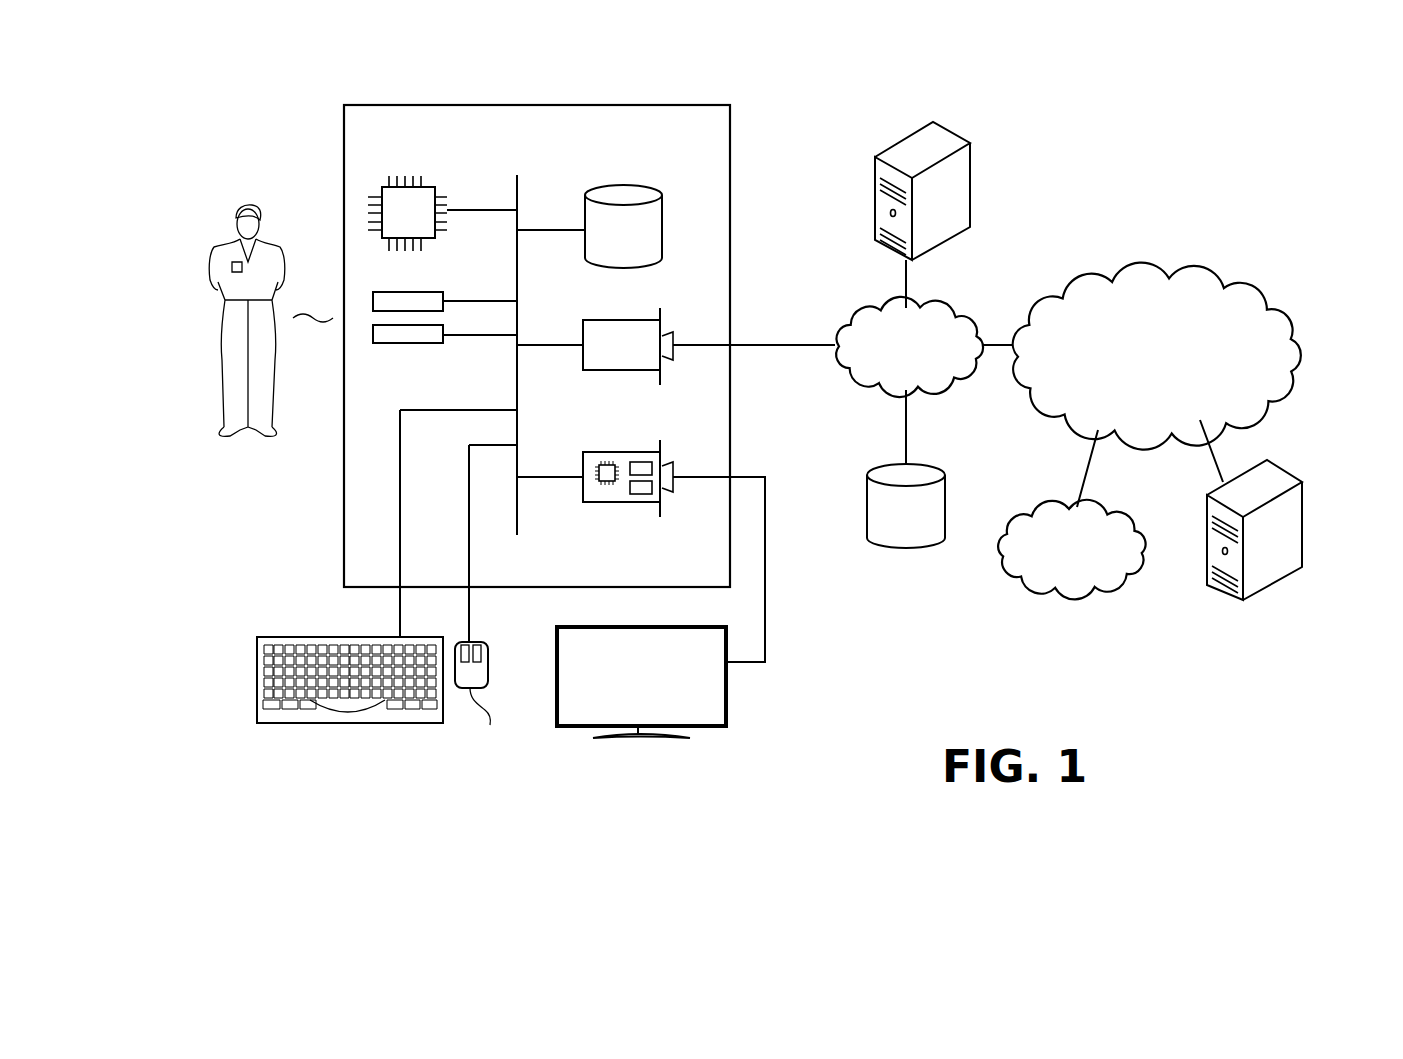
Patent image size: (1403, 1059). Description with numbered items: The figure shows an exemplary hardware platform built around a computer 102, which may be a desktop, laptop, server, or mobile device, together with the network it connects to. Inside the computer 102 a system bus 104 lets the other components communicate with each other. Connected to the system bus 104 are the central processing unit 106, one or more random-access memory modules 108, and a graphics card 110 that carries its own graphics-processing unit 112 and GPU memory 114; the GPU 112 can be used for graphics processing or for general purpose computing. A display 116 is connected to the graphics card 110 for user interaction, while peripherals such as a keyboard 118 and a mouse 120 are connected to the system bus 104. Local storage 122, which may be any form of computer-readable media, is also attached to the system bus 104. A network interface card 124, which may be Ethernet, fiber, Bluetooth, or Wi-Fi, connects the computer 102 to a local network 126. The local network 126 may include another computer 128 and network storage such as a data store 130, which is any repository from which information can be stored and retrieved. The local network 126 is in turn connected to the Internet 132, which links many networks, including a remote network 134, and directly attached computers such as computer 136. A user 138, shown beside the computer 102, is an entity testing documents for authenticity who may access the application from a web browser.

The computer 102 is at (687, 104).
The system bus 104 is at (517, 186).
The central processing unit (CPU) 106 is at (430, 187).
The random-access memory (RAM) modules 108 is at (443, 302).
The graphics card 110 is at (652, 528).
The graphics-processing unit (GPU) 112 is at (603, 483).
The GPU memory 114 is at (638, 494).
The display 116 is at (728, 710).
The keyboard 118 is at (352, 723).
The mouse 120 is at (486, 602).
The local storage 122 is at (665, 212).
The network interface card (NIC) 124 is at (583, 330).
The local network 126 is at (955, 307).
The computer 128 is at (958, 133).
The data store 130 is at (935, 465).
The Internet 132 is at (1195, 276).
The remote network 134 is at (1122, 508).
The computer 136 is at (1280, 470).
The user 138 is at (228, 252).